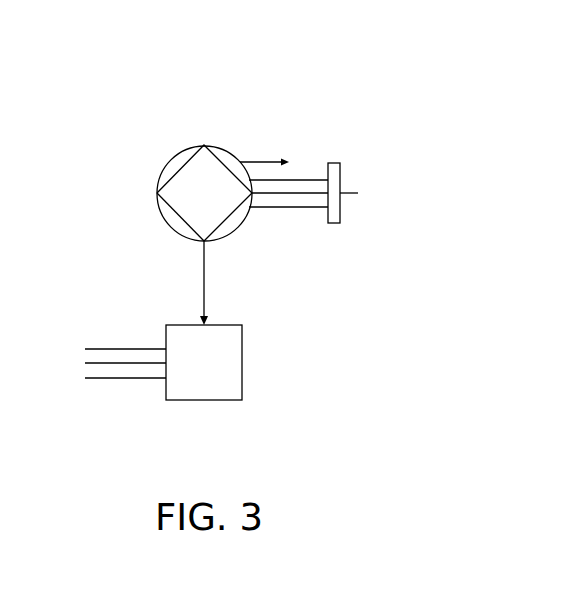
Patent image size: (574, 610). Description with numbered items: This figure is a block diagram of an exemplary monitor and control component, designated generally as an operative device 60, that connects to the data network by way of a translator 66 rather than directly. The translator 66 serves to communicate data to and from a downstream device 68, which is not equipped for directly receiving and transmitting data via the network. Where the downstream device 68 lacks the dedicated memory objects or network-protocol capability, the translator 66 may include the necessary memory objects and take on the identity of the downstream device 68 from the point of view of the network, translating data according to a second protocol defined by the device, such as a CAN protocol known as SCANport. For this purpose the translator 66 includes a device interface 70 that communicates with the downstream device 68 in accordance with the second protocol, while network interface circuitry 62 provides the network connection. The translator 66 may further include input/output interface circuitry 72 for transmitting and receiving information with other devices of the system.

The operative device 60 is at (138, 83).
The network interface circuitry 62 is at (231, 153).
The translator 66 is at (187, 182).
The downstream device 68 is at (188, 362).
The device interface 70 is at (173, 217).
The input/output interface circuitry 72 is at (233, 222).